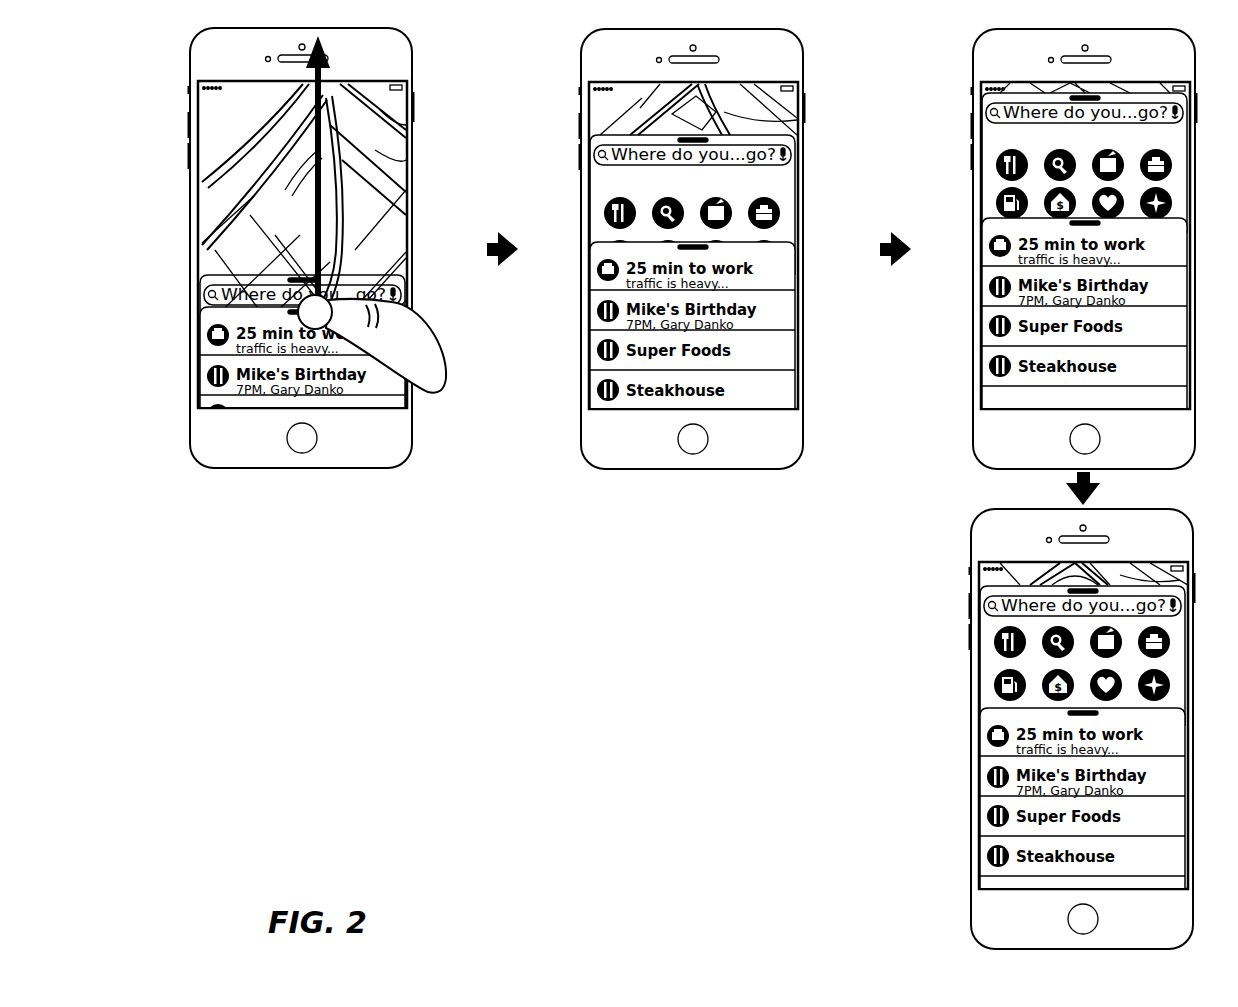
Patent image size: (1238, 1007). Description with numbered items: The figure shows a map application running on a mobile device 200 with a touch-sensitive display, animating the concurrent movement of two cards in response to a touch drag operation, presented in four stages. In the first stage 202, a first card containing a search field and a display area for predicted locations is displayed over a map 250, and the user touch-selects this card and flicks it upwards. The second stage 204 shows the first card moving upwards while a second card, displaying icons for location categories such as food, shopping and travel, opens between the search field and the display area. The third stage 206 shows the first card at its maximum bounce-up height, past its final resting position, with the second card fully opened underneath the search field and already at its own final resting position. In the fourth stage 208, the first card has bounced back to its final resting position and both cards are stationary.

The mobile device 200 is at (250, 470).
The first stage 202 is at (160, 465).
The second stage 204 is at (554, 465).
The third stage 206 is at (952, 465).
The fourth stage 208 is at (947, 943).
The map 250 is at (210, 127).